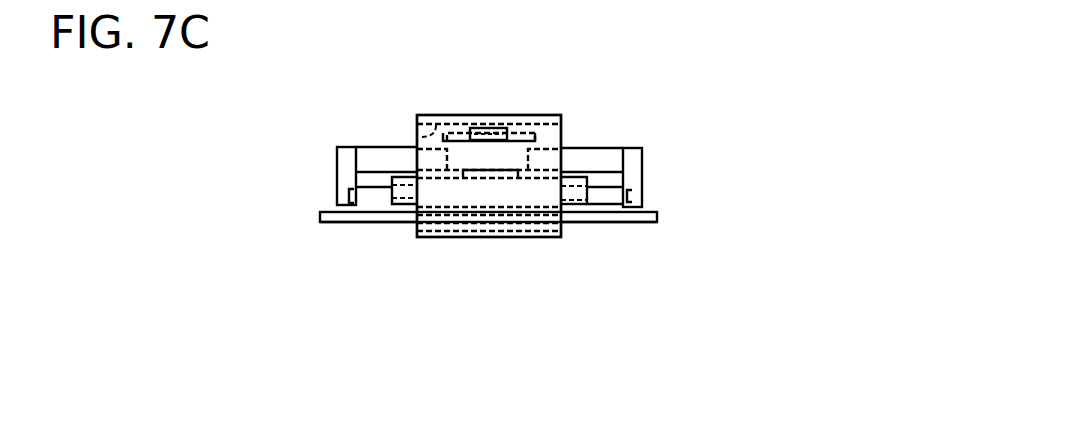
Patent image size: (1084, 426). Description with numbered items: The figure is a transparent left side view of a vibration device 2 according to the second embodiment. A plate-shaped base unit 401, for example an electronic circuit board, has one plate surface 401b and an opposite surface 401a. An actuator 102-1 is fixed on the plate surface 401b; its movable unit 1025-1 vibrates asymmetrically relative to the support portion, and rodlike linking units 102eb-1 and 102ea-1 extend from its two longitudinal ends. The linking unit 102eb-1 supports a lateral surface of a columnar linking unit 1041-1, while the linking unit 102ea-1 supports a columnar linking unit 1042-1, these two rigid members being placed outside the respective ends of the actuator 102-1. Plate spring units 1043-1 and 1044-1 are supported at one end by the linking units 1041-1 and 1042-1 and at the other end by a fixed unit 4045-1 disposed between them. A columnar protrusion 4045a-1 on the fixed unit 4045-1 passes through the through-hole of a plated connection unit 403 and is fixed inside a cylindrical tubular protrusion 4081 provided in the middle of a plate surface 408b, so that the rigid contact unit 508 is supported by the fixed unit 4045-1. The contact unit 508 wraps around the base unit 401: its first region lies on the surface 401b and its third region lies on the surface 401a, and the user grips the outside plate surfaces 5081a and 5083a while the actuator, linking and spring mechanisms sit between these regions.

The vibration device 2 is at (826, 80).
The contact unit 508 is at (417, 120).
The plate surface 408b is at (413, 130).
The outside plate surface 5081a is at (517, 118).
The cylindrical tubular protrusion 4081 is at (472, 128).
The protrusion 4045a-1 is at (497, 128).
The connection unit 403 is at (536, 138).
The fixed unit 4045-1 is at (482, 156).
The movable unit 1025-1 is at (540, 193).
The outside plate 5083a is at (520, 238).
The linking unit 1041-1 is at (343, 176).
The plate spring unit 1043-1 is at (370, 160).
The linking unit 102ea-1 is at (378, 195).
The actuator 102-1 is at (404, 208).
The linking unit 1042-1 is at (633, 177).
The plate spring unit 1044-1 is at (610, 158).
The linking unit 102eb-1 is at (604, 197).
The base unit 401 is at (648, 218).
The other surface 401a is at (373, 228).
The plate surface 401b is at (642, 213).